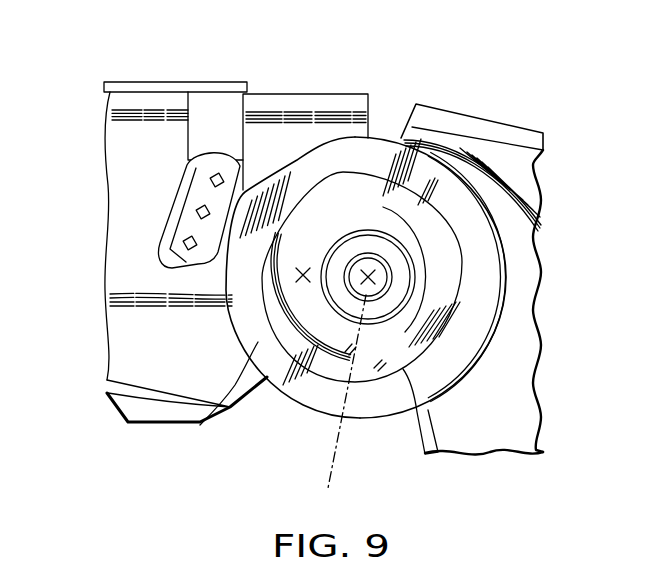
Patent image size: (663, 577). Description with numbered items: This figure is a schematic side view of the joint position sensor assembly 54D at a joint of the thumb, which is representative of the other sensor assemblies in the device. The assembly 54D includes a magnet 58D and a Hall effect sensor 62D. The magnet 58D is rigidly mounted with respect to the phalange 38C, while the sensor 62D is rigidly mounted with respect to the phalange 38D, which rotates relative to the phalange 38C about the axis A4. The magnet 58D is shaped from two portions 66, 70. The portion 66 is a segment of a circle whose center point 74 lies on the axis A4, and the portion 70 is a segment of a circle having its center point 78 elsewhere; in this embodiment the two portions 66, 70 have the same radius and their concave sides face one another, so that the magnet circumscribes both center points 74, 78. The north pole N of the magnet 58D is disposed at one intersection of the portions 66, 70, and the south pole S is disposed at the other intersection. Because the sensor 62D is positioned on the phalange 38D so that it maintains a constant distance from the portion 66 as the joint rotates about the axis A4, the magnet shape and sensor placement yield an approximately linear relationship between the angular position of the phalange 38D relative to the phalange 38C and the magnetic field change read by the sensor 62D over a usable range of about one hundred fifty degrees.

The phalange 38D is at (134, 113).
The Hall effect sensor 62D is at (220, 168).
The north pole N is at (347, 153).
The magnet 58D is at (403, 162).
The phalange 38C is at (495, 152).
The center point 78 is at (303, 275).
The portion 66 is at (235, 385).
The sensor assembly 54D is at (252, 436).
The south pole S is at (327, 393).
The center point 74 is at (368, 277).
The portion 70 is at (438, 456).
The axis A4 is at (340, 445).